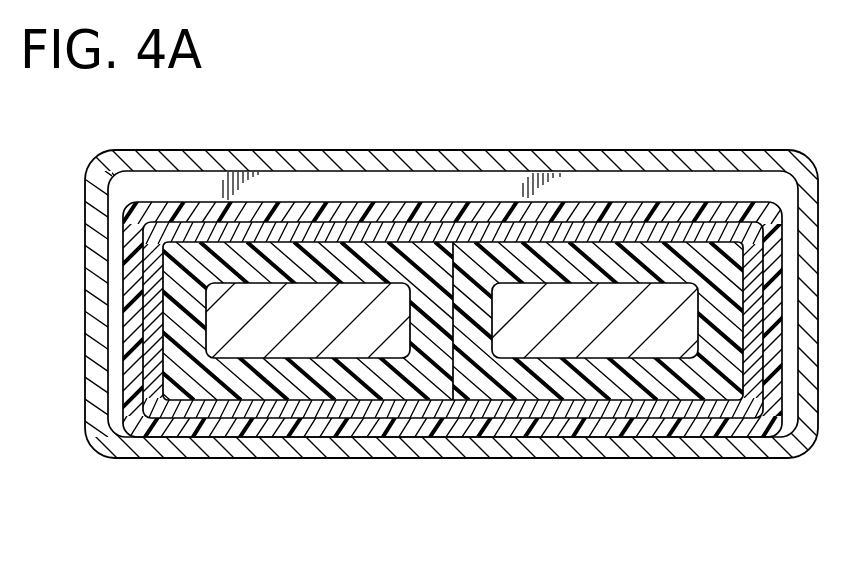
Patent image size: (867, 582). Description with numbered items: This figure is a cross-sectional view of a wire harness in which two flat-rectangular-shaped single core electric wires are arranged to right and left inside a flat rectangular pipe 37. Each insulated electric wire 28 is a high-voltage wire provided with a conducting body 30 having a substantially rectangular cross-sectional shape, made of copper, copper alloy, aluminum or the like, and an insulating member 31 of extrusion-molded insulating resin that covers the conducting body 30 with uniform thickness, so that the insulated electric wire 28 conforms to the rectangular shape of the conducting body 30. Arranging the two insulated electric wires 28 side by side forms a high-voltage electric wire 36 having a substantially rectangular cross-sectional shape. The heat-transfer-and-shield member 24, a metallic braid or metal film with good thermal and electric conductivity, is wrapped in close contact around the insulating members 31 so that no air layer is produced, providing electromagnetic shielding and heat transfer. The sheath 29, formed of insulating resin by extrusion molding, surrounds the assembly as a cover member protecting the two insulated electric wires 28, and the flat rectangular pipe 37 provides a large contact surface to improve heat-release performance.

The flat rectangular pipe 37 is at (430, 160).
The high-voltage electric wire 36 is at (626, 200).
The sheath 29 is at (447, 428).
The heat-transfer-and-shield member 24 is at (560, 406).
The insulating member 31 is at (230, 378).
The conducting body 30 is at (328, 328).
The insulated electric wire 28 is at (668, 342).